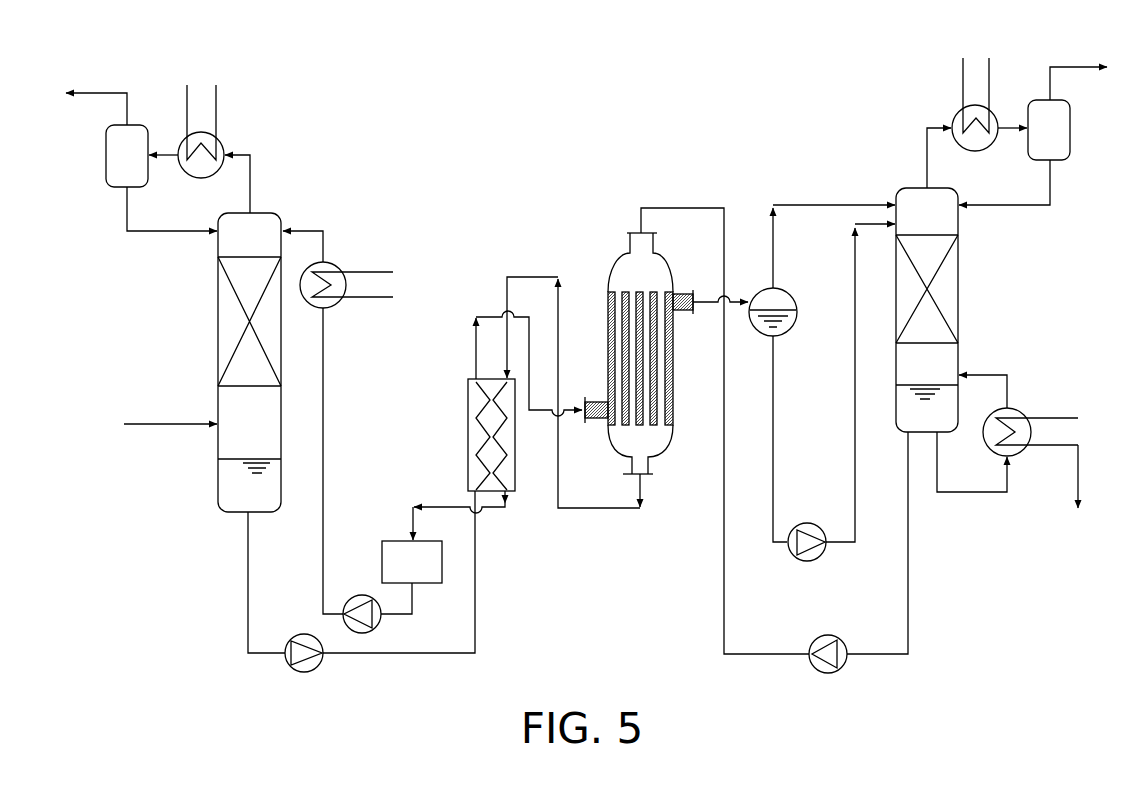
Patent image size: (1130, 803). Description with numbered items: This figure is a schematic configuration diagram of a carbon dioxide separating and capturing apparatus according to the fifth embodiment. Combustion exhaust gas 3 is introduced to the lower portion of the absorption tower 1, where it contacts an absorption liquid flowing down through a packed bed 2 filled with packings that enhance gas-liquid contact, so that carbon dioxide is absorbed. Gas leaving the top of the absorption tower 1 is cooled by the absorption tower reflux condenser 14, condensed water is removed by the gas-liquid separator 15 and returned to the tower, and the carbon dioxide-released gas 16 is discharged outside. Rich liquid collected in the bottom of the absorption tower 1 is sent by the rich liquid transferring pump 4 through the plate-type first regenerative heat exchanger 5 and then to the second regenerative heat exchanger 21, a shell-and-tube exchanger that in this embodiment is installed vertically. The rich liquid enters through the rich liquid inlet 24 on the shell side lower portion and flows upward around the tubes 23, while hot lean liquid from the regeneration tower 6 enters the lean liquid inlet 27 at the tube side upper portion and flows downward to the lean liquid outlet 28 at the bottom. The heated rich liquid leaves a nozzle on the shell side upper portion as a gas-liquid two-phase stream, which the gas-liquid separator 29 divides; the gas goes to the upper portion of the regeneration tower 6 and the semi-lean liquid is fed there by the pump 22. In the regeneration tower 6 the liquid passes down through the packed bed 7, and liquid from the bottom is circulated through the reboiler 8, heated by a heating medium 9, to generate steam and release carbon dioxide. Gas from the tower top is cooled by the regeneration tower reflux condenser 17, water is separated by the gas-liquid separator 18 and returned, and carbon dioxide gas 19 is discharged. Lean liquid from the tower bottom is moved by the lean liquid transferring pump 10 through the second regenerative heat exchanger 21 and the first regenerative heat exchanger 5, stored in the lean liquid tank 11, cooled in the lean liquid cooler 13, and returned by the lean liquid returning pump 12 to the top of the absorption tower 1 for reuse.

The absorption tower 1 is at (284, 213).
The packed bed 2 is at (218, 272).
The combustion exhaust gas 3 is at (168, 424).
The rich liquid transferring pump 4 is at (285, 659).
The first regenerative heat exchanger 5 is at (468, 408).
The regeneration tower 6 is at (898, 189).
The packed bed 7 is at (959, 278).
The reboiler 8 is at (1020, 409).
The heating medium 9 is at (1063, 418).
The lean liquid transferring pump 10 is at (843, 664).
The lean liquid tank 11 is at (397, 541).
The lean liquid returning pump 12 is at (380, 621).
The lean liquid cooler 13 is at (332, 263).
The absorption tower reflux condenser 14 is at (218, 138).
The gas-liquid separator 15 is at (108, 190).
The carbon dioxide-released gas 16 is at (112, 92).
The regeneration tower reflux condenser 17 is at (962, 94).
The gas-liquid separator 18 is at (1072, 122).
The carbon dioxide gas 19 is at (1092, 67).
The second regenerative heat exchanger 21 is at (608, 275).
The pump 22 is at (820, 558).
The catalyst tubes 23 is at (665, 410).
The rich liquid inlet 24 is at (585, 401).
The lean liquid inlet 27 is at (632, 232).
The lean liquid outlet 28 is at (648, 478).
The gas-liquid separator 29 is at (793, 298).